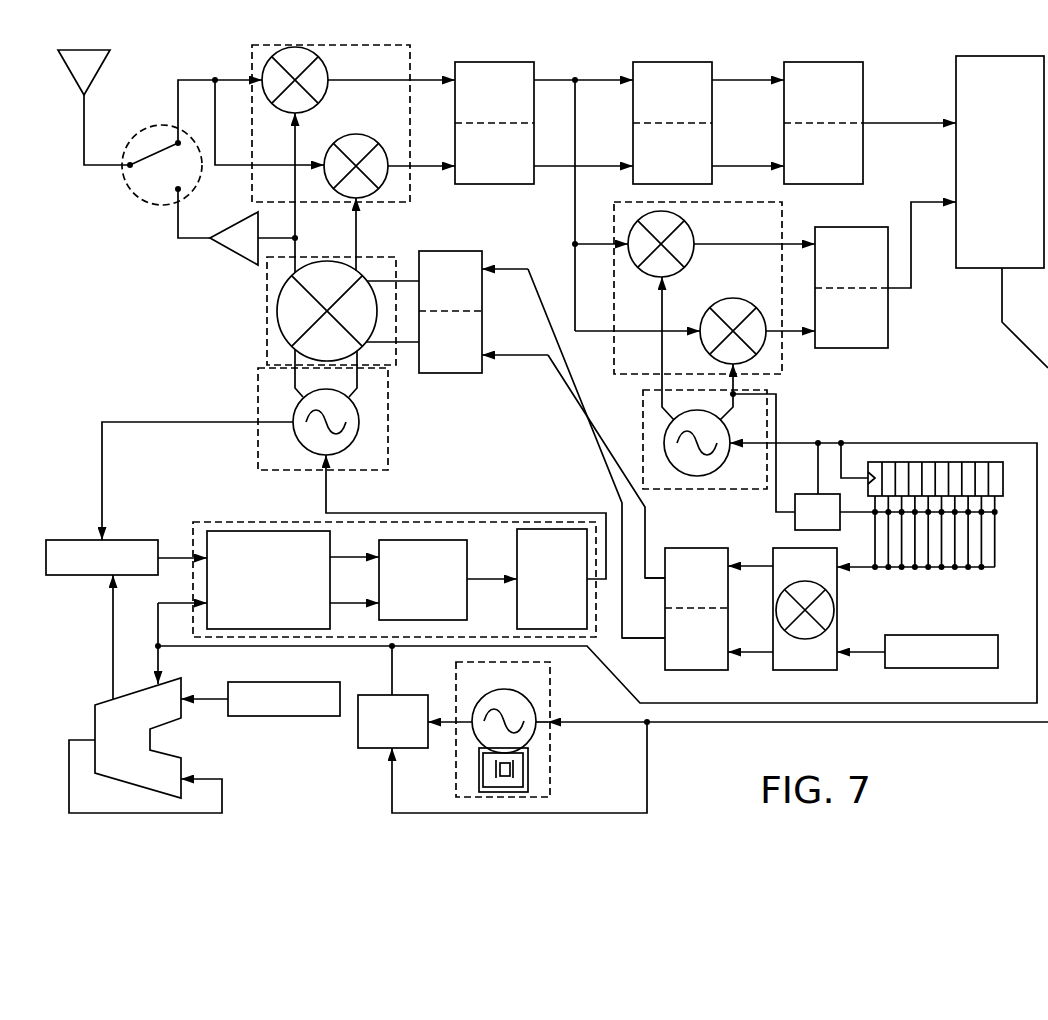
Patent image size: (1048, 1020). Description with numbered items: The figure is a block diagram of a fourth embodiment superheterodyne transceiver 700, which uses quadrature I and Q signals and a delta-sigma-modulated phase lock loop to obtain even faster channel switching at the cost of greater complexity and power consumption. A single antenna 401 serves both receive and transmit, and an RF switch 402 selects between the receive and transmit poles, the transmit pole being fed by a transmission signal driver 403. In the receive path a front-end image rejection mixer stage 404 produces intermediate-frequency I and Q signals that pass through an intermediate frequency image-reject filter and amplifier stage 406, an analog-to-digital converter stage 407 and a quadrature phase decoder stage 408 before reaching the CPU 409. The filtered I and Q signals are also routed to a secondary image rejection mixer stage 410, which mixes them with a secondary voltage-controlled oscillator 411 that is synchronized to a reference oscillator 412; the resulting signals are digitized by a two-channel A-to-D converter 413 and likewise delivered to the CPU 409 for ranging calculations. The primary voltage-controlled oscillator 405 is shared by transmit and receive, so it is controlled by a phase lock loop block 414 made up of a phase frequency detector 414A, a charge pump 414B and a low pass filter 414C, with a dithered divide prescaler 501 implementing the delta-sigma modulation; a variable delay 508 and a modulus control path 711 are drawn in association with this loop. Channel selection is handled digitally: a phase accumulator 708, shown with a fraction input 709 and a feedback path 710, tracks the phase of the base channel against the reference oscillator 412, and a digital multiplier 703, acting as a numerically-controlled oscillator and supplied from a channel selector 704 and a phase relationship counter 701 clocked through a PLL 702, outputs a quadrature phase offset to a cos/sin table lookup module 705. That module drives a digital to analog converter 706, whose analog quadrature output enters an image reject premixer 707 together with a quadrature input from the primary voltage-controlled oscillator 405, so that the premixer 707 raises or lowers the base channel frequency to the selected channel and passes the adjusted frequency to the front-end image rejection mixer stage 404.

The antenna 401 is at (96, 70).
The RF switch 402 is at (139, 197).
The transmission signal driver 403 is at (236, 249).
The front-end image rejection mixer stage 404 is at (357, 113).
The primary voltage-controlled oscillator 405 is at (388, 437).
The intermediate frequency image-reject filter and amplifier stage 406 is at (537, 72).
The analog-to-digital converter stage 407 is at (713, 72).
The quadrature phase decoder stage 408 is at (865, 80).
The CPU 409 is at (986, 190).
The secondary image rejection mixer stage 410 is at (782, 224).
The secondary voltage-controlled oscillator 411 is at (663, 490).
The reference oscillator 412 is at (557, 762).
The two-channel A-to-D converter 413 is at (888, 300).
The phase lock loop block 414 is at (237, 522).
The phase frequency detector 414A is at (246, 625).
The charge pump 414B is at (401, 612).
The low pass filter 414C is at (530, 622).
The dithered divide prescaler 501 is at (86, 540).
The variable delay 508 is at (373, 748).
The fourth embodiment superheterodyne transceiver 700 is at (970, 752).
The shift register 701 is at (1003, 478).
The PLL 702 is at (795, 522).
The digital multiplier 703 is at (805, 670).
The channel N input 704 is at (967, 635).
The cos/sin table lookup module 705 is at (697, 670).
The digital to analog converter 706 is at (450, 373).
The image reject premixer 707 is at (267, 312).
The phase accumulator 708 is at (104, 703).
The fraction register 709 is at (257, 716).
The accumulator feedback path 710 is at (222, 793).
The modulus control line 711 is at (111, 633).